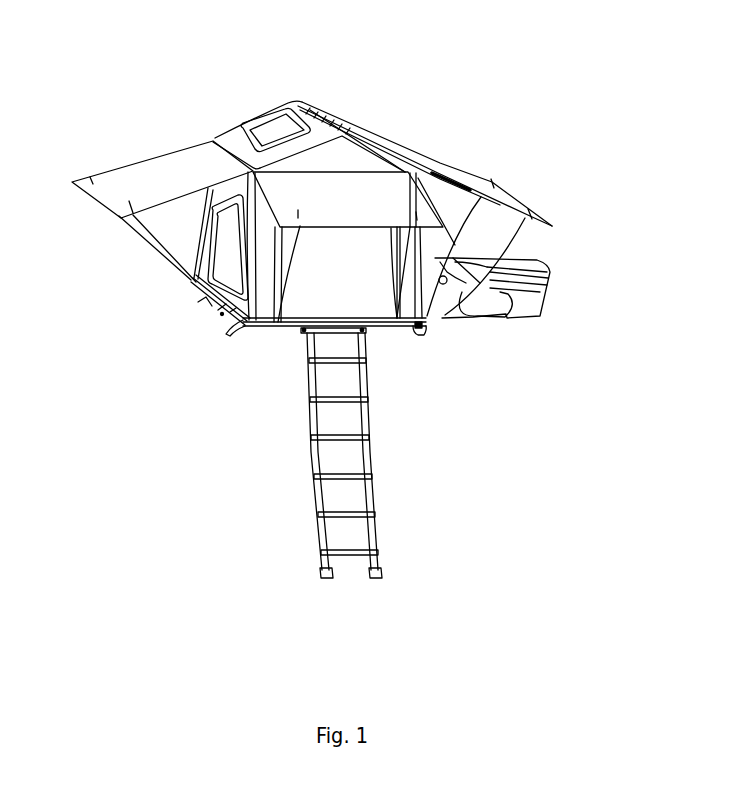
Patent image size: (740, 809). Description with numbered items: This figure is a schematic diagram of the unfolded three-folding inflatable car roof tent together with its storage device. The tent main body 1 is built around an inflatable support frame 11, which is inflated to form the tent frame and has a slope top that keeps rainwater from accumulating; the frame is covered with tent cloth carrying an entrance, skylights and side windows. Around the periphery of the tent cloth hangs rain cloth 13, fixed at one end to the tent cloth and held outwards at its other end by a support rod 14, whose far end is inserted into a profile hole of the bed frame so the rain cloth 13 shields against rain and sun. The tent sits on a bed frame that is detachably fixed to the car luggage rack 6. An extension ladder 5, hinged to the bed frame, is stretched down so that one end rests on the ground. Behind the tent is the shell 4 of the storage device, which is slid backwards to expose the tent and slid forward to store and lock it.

The tent main body 1 is at (250, 118).
The rain cloth 13 is at (132, 173).
The support rod 14 is at (156, 252).
The inflatable support frame 11 is at (203, 283).
The car luggage rack 6 is at (290, 328).
The extension ladder 5 is at (317, 463).
The shell 4 is at (538, 278).